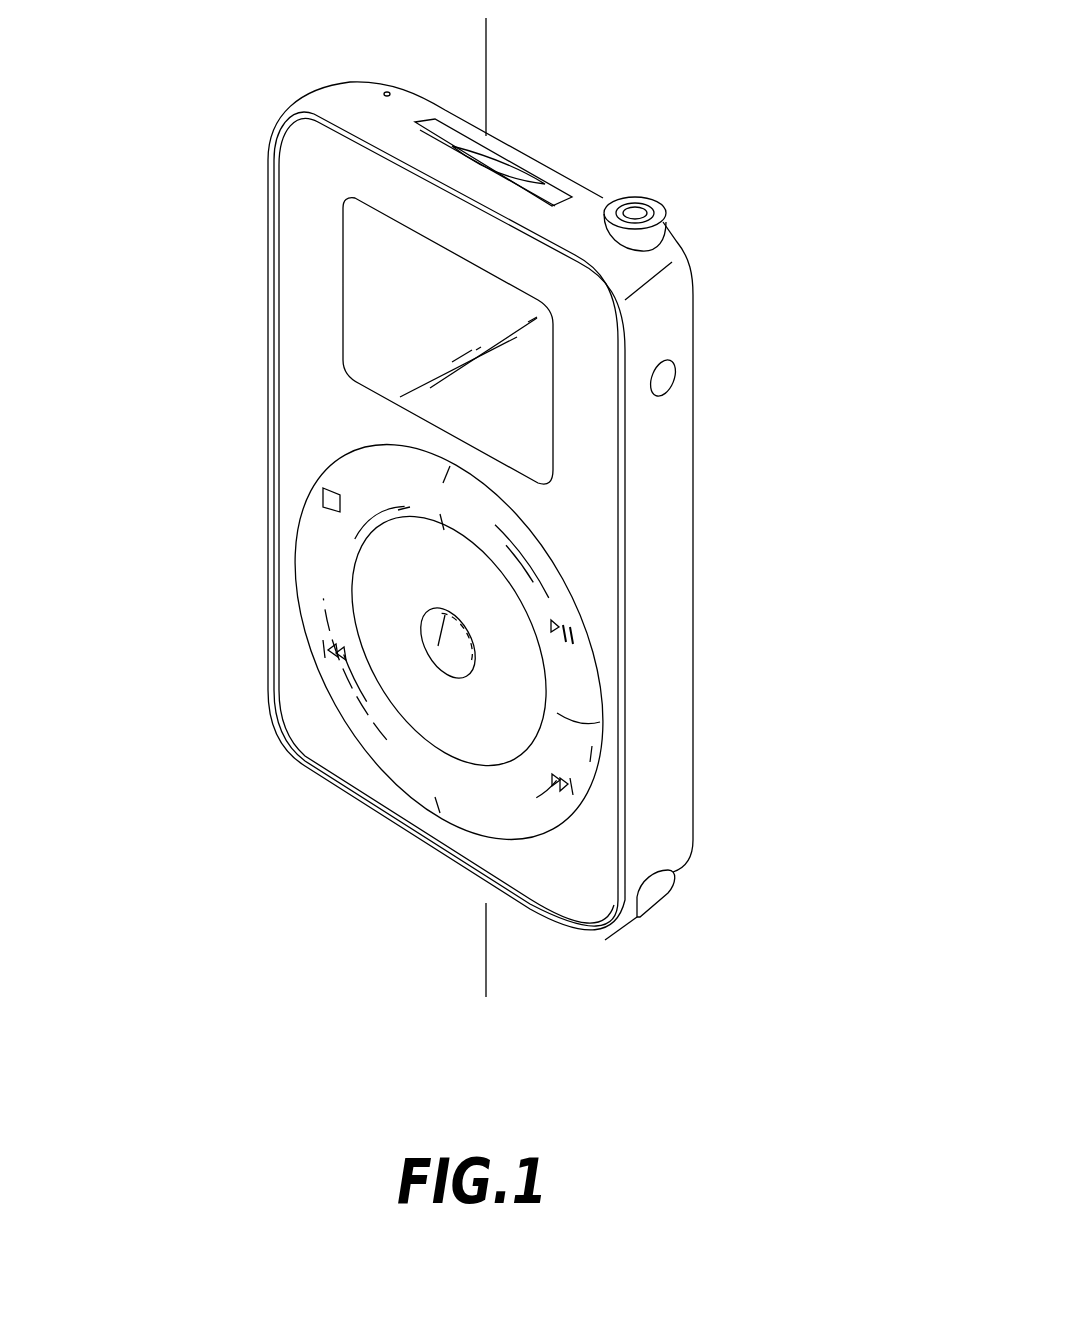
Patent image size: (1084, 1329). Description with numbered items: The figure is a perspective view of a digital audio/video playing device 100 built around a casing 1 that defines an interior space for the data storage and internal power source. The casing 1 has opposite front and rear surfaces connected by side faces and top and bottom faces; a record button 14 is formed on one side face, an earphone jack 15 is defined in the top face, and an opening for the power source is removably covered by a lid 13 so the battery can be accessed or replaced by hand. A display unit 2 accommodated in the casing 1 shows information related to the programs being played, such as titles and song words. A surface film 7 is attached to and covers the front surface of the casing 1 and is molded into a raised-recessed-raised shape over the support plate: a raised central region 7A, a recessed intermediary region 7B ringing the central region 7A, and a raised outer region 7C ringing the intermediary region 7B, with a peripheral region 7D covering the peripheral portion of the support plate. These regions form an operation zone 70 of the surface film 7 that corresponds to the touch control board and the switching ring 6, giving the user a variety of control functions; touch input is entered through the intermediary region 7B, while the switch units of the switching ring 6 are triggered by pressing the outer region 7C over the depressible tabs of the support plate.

The digital audio/video playing device 100 is at (519, 511).
The casing 1 is at (558, 511).
The display unit 2 is at (360, 308).
The switching ring 6 is at (486, 42).
The surface film 7 is at (295, 172).
The raised central region 7A is at (370, 787).
The recessed intermediary region 7B is at (368, 596).
The raised outer region 7C is at (340, 532).
The peripheral region 7D is at (433, 650).
The lid 13 is at (653, 888).
The record button 14 is at (668, 386).
The earphone jack 15 is at (636, 207).
The operation zone 70 is at (478, 680).